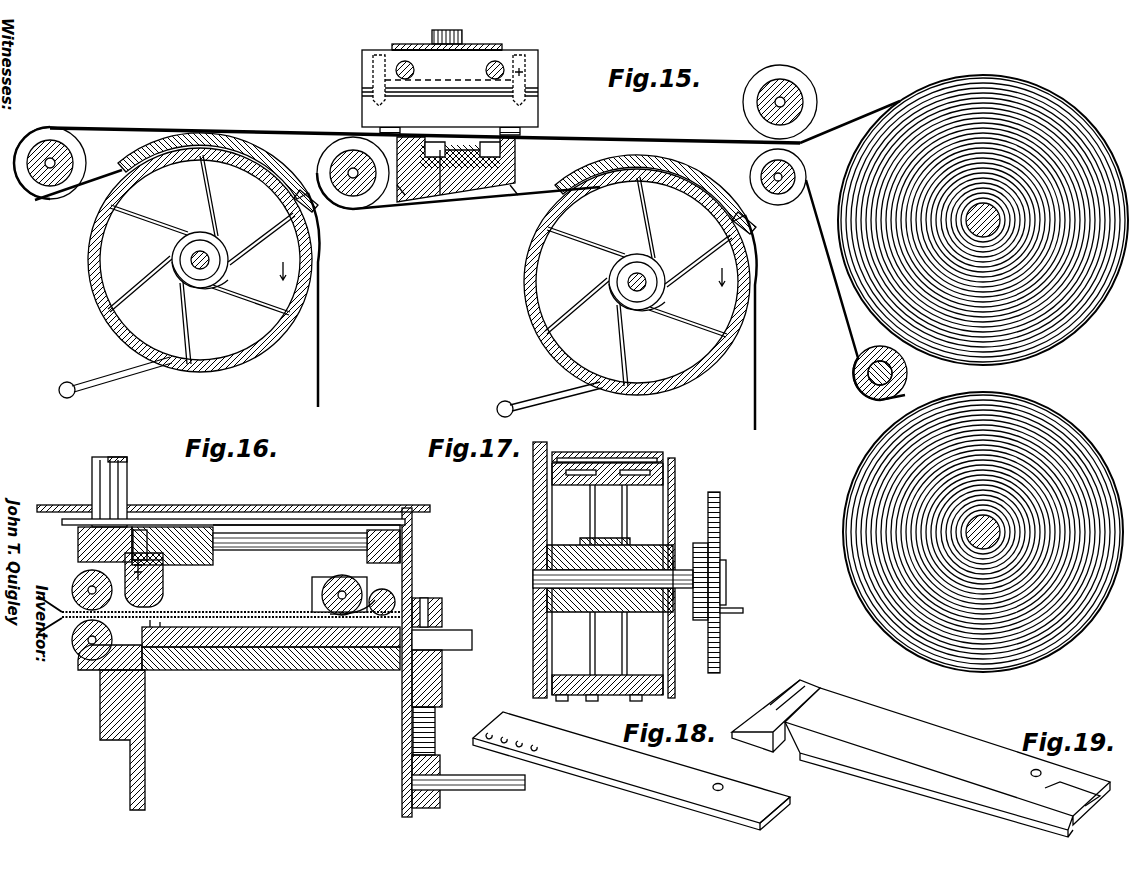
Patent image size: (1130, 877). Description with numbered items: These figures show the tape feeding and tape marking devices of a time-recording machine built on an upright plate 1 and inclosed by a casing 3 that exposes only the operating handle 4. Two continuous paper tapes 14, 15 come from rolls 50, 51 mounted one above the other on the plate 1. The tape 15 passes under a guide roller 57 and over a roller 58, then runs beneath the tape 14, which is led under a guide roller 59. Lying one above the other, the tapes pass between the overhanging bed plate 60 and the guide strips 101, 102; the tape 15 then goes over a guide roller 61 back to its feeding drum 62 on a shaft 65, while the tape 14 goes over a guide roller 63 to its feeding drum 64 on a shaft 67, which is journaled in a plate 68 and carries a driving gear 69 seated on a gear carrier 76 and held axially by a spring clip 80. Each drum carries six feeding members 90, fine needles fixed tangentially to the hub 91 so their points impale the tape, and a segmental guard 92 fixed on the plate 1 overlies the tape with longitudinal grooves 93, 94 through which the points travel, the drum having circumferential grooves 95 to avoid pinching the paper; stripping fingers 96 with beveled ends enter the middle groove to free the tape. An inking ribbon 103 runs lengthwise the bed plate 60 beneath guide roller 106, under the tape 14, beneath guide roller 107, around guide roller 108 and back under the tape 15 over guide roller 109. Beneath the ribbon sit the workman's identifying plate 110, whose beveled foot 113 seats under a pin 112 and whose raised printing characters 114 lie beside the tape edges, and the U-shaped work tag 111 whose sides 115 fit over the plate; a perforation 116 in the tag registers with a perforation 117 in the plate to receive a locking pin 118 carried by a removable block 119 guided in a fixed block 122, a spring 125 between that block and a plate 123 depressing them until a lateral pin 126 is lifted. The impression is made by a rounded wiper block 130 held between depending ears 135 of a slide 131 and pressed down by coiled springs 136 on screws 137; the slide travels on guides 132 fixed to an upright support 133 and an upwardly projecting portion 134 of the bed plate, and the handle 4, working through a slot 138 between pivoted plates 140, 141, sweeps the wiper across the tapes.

In FIG. 16, the plate 1 is at (140, 770).
In FIG. 17, the plate 1 is at (533, 503).
In FIG. 16, the casing 3 is at (318, 505).
In FIG. 15, the operating handle 4 is at (463, 37).
In FIG. 16, the operating handle 4 is at (92, 478).
In FIG. 15, the paper tape 14 is at (258, 138).
In FIG. 16, the paper tape 14 is at (205, 612).
In FIG. 17, the paper tape 14 is at (660, 462).
In FIG. 15, the paper tape 15 is at (592, 143).
In FIG. 16, the paper tape 15 is at (230, 617).
In FIG. 15, the tape roll 50 is at (1052, 110).
In FIG. 15, the tape roll 51 is at (1040, 412).
In FIG. 15, the guide roller 57 is at (908, 374).
In FIG. 15, the guide roller 58 is at (800, 165).
In FIG. 15, the guide roller 59 is at (790, 75).
In FIG. 15, the bed plate 60 is at (512, 170).
In FIG. 16, the bed plate 60 is at (330, 650).
In FIG. 15, the guide roller 61 is at (353, 200).
In FIG. 15, the feeding drum 62 is at (530, 260).
In FIG. 15, the guide roller 63 is at (55, 128).
In FIG. 17, the feeding drum 64 is at (676, 478).
In FIG. 15, the shaft 65 is at (630, 288).
In FIG. 15, the shaft 67 is at (210, 258).
In FIG. 17, the shaft 67 is at (682, 572).
In FIG. 17, the plate 68 is at (675, 518).
In FIG. 17, the driving gear 69 is at (720, 522).
In FIG. 17, the gear carrier 76 is at (722, 556).
In FIG. 17, the spring clip 80 is at (730, 612).
In FIG. 15, the feeding members 90 is at (200, 188).
In FIG. 17, the feeding members 90 is at (590, 525).
In FIG. 15, the hub 91 is at (180, 283).
In FIG. 17, the hub 91 is at (630, 548).
In FIG. 15, the segmental guard 92 is at (300, 190).
In FIG. 17, the segmental guard 92 is at (606, 460).
In FIG. 17, the groove 93 is at (585, 458).
In FIG. 15, the groove 94 is at (175, 165).
In FIG. 17, the groove 94 is at (636, 470).
In FIG. 17, the circumferential grooves 95 is at (562, 701).
In FIG. 15, the stripping fingers 96 is at (132, 372).
In FIG. 15, the guide strip 101 is at (380, 128).
In FIG. 15, the guide strip 102 is at (520, 128).
In FIG. 16, the guide strip 102 is at (295, 612).
In FIG. 15, the inking ribbon 103 is at (432, 142).
In FIG. 16, the inking ribbon 103 is at (60, 605).
In FIG. 16, the guide roller 106 is at (80, 575).
In FIG. 16, the guide roller 107 is at (345, 573).
In FIG. 16, the guide roller 108 is at (395, 600).
In FIG. 16, the guide roller 109 is at (75, 650).
In FIG. 15, the identifying plate 110 is at (450, 185).
In FIG. 16, the identifying plate 110 is at (268, 660).
In FIG. 19, the identifying plate 110 is at (908, 735).
In FIG. 15, the work identifying tag 111 is at (485, 142).
In FIG. 18, the work identifying tag 111 is at (610, 765).
In FIG. 16, the pin 112 is at (152, 628).
In FIG. 16, the beveled foot 113 is at (85, 672).
In FIG. 19, the beveled foot 113 is at (740, 728).
In FIG. 16, the printing characters 114 is at (165, 628).
In FIG. 19, the printing characters 114 is at (797, 682).
In FIG. 15, the sides 115 is at (408, 195).
In FIG. 18, the sides 115 is at (672, 797).
In FIG. 18, the perforation 116 is at (722, 785).
In FIG. 19, the perforation 117 is at (1032, 768).
In FIG. 16, the pin 118 is at (442, 608).
In FIG. 16, the removable block 119 is at (428, 605).
In FIG. 16, the fixed block 122 is at (442, 678).
In FIG. 16, the plate 123 is at (412, 780).
In FIG. 16, the spring 125 is at (413, 740).
In FIG. 16, the pin 126 is at (492, 791).
In FIG. 15, the wiper block 130 is at (362, 100).
In FIG. 16, the wiper block 130 is at (163, 590).
In FIG. 15, the slide 131 is at (538, 60).
In FIG. 16, the slide 131 is at (180, 540).
In FIG. 15, the guides 132 is at (414, 70).
In FIG. 16, the guides 132 is at (255, 538).
In FIG. 16, the upright support 133 is at (400, 545).
In FIG. 16, the upwardly projecting portion 134 is at (78, 538).
In FIG. 15, the depending ears 135 is at (538, 90).
In FIG. 16, the depending ears 135 is at (165, 570).
In FIG. 16, the coiled springs 136 is at (138, 530).
In FIG. 15, the screws 137 is at (373, 70).
In FIG. 16, the screws 137 is at (142, 560).
In FIG. 16, the slot 138 is at (248, 518).
In FIG. 15, the plate 140 is at (408, 45).
In FIG. 15, the plate 141 is at (498, 48).
In FIG. 16, the plate 141 is at (340, 525).